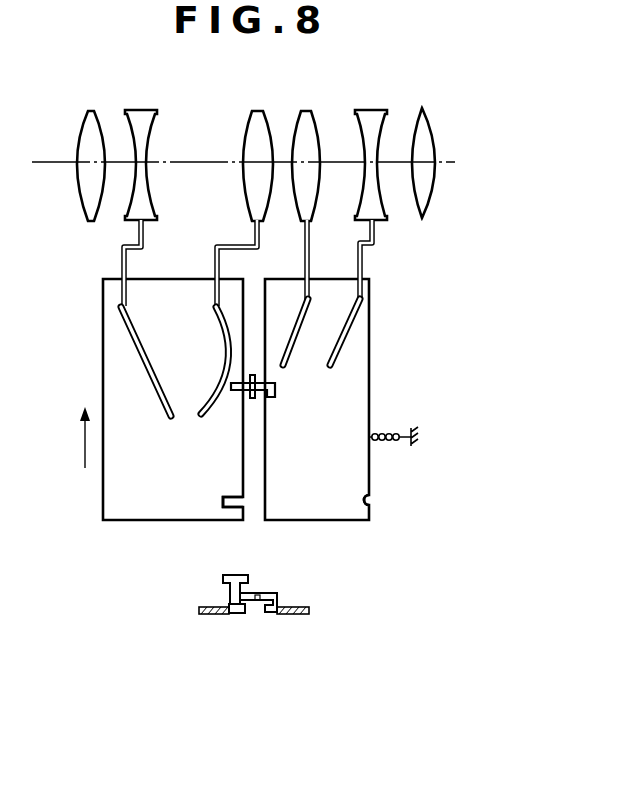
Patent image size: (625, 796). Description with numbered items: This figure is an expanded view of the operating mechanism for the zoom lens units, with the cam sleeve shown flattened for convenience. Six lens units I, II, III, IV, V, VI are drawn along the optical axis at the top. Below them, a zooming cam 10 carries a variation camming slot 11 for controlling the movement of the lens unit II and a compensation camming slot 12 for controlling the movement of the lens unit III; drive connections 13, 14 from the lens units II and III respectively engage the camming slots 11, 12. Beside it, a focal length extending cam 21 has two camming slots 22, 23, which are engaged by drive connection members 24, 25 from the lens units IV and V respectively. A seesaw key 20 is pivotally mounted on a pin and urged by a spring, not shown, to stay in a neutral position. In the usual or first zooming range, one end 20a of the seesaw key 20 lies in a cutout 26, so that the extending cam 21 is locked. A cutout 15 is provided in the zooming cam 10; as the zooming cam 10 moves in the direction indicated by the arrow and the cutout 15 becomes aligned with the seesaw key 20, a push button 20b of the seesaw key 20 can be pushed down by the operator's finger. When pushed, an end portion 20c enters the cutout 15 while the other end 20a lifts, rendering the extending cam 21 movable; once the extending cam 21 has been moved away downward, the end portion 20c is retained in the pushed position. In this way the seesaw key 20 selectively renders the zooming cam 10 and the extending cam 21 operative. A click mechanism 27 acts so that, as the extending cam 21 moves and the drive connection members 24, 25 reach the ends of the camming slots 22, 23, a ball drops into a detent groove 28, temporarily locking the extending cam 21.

The lens unit I is at (90, 108).
The lens unit II is at (140, 108).
The lens unit III is at (257, 108).
The lens unit IV is at (305, 108).
The lens unit V is at (367, 108).
The lens unit VI is at (423, 108).
The zooming cam 10 is at (103, 507).
The variation camming slot 11 is at (150, 380).
The compensation camming slot 12 is at (217, 392).
The drive connection 13 is at (128, 258).
The drive connection 14 is at (221, 258).
The cutout 15 is at (237, 492).
The seesaw key 20 is at (240, 395).
The one end of the seesaw key 20a is at (283, 600).
The push button 20b is at (237, 575).
The end portion 20c is at (231, 613).
The focal length extending cam 21 is at (345, 515).
The camming slot 22 is at (287, 338).
The camming slot 23 is at (333, 346).
The drive connection member 24 is at (311, 253).
The drive connection member 25 is at (364, 262).
The cutout 26 is at (270, 396).
The click mechanism 27 is at (393, 428).
The detent groove 28 is at (372, 500).